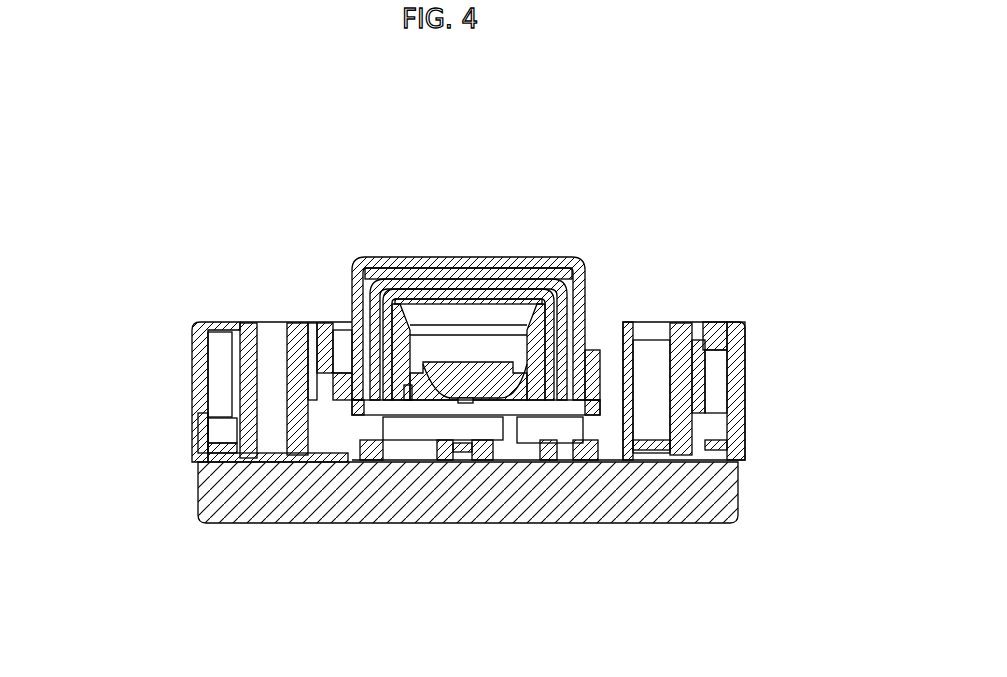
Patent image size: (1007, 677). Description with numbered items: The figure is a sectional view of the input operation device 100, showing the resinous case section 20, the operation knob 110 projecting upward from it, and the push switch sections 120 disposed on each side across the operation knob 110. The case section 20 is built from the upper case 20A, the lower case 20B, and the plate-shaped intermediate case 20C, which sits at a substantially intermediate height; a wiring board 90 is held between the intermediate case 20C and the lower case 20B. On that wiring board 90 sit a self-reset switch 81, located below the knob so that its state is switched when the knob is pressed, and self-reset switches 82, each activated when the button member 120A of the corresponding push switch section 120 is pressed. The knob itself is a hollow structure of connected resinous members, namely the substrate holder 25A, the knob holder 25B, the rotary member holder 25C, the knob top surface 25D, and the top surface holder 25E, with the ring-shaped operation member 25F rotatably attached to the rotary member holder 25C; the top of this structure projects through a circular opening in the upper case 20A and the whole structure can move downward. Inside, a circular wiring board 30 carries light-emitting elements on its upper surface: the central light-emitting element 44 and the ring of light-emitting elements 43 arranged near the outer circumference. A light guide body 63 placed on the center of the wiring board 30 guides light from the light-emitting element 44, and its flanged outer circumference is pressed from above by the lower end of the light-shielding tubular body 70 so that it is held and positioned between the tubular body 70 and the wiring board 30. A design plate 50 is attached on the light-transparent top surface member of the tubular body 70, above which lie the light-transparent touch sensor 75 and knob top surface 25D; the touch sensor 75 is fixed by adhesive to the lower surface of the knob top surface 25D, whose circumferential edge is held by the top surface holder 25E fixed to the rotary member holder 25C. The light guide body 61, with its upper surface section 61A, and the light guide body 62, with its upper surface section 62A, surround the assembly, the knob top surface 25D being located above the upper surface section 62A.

The input operation device 100 is at (676, 172).
The operation knob 110 is at (581, 250).
The push switch section 120 is at (691, 314).
The button member 120A is at (705, 350).
The case section 20 is at (118, 377).
The upper case 20A is at (203, 360).
The lower case 20B is at (212, 492).
The intermediate case 20C is at (205, 442).
The substrate holder 25A is at (538, 415).
The knob holder 25B is at (328, 355).
The rotary member holder 25C is at (360, 328).
The knob top surface 25D is at (418, 265).
The top surface holder 25E is at (356, 259).
The ring-shaped operation member 25F is at (352, 293).
The wiring board 30 is at (457, 402).
The light-emitting element 43 is at (393, 362).
The light-emitting element 44 is at (462, 403).
The design plate 50 is at (465, 295).
The light guide body 61 is at (555, 340).
The upper surface section 61A is at (525, 270).
The light guide body 62 is at (563, 312).
The upper surface section 62A is at (507, 280).
The light guide body 63 is at (437, 397).
The tubular body 70 is at (408, 395).
The touch sensor 75 is at (457, 297).
The self-reset switch 81 is at (470, 405).
The self-reset switch 82 is at (253, 450).
The wiring board 90 is at (288, 462).